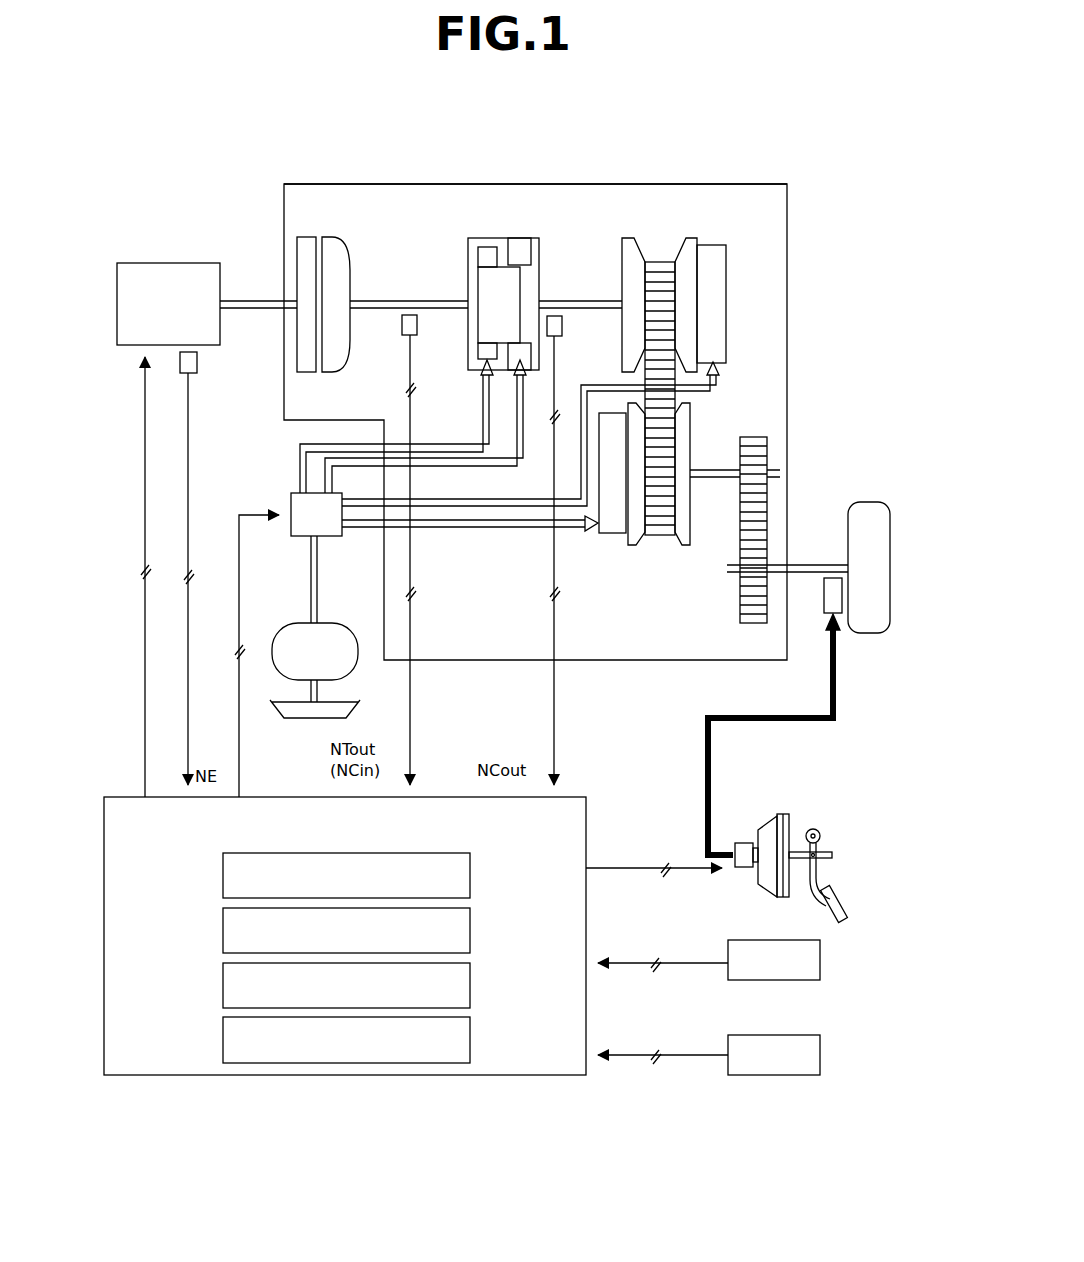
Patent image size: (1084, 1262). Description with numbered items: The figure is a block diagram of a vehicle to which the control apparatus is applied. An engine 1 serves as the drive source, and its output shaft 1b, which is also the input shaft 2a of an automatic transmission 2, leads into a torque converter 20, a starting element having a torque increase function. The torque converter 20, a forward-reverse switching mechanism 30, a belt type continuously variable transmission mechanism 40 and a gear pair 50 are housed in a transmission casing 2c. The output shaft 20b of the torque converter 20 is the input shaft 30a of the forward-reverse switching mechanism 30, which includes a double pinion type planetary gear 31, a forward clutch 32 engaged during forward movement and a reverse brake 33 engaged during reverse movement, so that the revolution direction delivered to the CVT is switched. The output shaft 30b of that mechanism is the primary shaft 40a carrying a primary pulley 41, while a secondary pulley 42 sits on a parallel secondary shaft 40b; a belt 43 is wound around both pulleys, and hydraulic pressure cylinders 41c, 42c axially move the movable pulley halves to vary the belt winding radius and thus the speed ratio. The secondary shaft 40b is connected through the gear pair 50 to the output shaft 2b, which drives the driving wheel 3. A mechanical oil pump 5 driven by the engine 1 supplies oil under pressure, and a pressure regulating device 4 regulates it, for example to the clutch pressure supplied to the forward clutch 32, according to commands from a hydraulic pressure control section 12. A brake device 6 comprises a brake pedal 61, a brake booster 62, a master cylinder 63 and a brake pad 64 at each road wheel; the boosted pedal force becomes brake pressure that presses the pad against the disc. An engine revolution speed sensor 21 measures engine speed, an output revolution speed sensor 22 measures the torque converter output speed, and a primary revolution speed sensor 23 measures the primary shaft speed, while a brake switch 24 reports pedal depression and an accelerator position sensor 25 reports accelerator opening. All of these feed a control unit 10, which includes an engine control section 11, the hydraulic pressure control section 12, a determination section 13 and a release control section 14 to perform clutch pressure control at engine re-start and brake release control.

The engine 1 is at (170, 263).
The output shaft of engine 1b is at (258, 265).
The automatic transmission 2 is at (758, 172).
The input shaft of automatic transmission 2a is at (252, 300).
The output shaft of automatic transmission 2b is at (816, 563).
The transmission casing 2c is at (578, 184).
The driving wheel 3 is at (876, 502).
The pressure regulating device 4 is at (291, 500).
The mechanical oil pump 5 is at (330, 624).
The brake device 6 is at (738, 840).
The control unit 10 is at (345, 961).
The engine control section 11 is at (470, 878).
The hydraulic pressure control section 12 is at (470, 931).
The determination section 13 is at (470, 986).
The release control section 14 is at (470, 1041).
The torque converter 20 is at (323, 226).
The output shaft of torque converter 20b is at (409, 265).
The engine revolution speed sensor 21 is at (197, 362).
The output revolution speed sensor 22 is at (418, 328).
The primary revolution speed sensor 23 is at (562, 326).
The brake switch 24 is at (820, 962).
The accelerator position sensor 25 is at (820, 1054).
The forward-reverse switching mechanism 30 is at (485, 257).
The input shaft of forward-reverse switching mechanism 30a is at (382, 300).
The output shaft of forward-reverse switching mechanism 30b is at (578, 300).
The double pinion type planetary gear 31 is at (478, 284).
The forward clutch 32 is at (490, 248).
The reverse brake 33 is at (522, 240).
The belt type continuously variable transmission mechanism 40 is at (684, 372).
The primary shaft 40a is at (580, 268).
The secondary shaft 40b is at (721, 480).
The primary pulley 41 is at (638, 260).
The hydraulic pressure cylinder of primary pulley 41c is at (718, 306).
The secondary pulley 42 is at (686, 547).
The hydraulic pressure cylinder of secondary pulley 42c is at (612, 535).
The belt 43 is at (660, 262).
The gear pair 50 is at (757, 430).
The brake pedal 61 is at (846, 903).
The brake booster 62 is at (768, 814).
The master cylinder 63 is at (742, 843).
The brake pad 64 is at (825, 600).